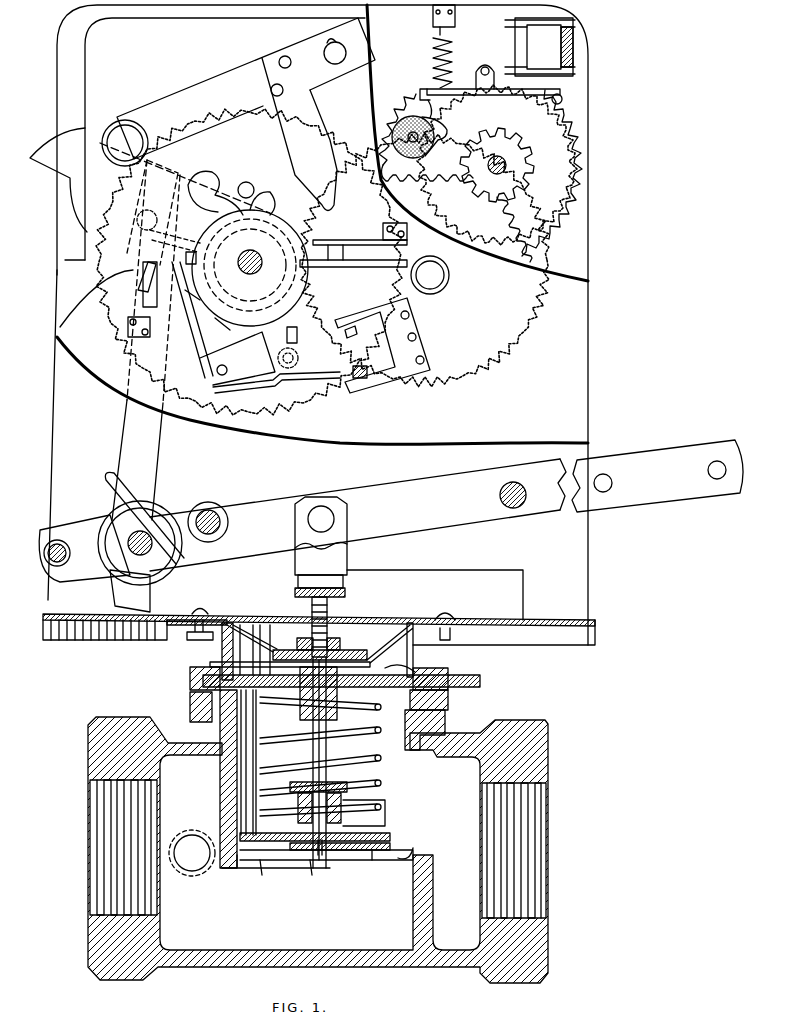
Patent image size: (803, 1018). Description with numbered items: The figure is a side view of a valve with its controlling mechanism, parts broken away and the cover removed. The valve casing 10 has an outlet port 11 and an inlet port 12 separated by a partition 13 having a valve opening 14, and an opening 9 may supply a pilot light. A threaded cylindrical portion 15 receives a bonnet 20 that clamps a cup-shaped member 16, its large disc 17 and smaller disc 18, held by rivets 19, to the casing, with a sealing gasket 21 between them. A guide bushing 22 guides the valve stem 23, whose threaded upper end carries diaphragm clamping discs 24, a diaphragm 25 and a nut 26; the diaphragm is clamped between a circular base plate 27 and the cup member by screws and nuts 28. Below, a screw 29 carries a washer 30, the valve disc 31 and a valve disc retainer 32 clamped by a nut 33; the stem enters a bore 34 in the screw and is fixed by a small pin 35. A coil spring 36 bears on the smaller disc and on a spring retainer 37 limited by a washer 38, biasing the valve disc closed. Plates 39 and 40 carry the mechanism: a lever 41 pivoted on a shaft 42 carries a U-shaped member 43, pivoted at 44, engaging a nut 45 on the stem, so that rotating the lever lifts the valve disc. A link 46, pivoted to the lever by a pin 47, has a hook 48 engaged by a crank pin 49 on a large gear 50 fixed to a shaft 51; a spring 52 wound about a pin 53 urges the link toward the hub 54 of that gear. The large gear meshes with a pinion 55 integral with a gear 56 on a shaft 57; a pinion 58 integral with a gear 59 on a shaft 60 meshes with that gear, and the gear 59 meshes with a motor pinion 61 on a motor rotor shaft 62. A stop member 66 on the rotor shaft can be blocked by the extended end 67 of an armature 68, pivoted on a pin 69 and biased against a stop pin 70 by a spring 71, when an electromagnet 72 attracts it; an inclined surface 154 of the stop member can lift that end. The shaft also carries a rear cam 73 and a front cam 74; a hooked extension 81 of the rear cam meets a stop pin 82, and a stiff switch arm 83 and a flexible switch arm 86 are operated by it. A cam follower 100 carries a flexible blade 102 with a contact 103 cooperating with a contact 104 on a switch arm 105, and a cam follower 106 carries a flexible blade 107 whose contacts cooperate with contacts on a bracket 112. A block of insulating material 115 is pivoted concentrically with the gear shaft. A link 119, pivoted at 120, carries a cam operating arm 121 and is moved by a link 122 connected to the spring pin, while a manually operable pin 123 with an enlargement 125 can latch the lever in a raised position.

The opening 9 is at (195, 875).
The valve casing 10 is at (548, 730).
The outlet port 11 is at (548, 843).
The inlet port 12 is at (100, 833).
The partition 13 is at (222, 820).
The valve opening 14 is at (410, 858).
The cylindrical portion 15 is at (408, 725).
The cup-shaped member 16 is at (222, 666).
The large disc 17 is at (450, 672).
The smaller disc 18 is at (440, 701).
The rivets 19 is at (200, 690).
The bonnet 20 is at (198, 715).
The sealing gasket 21 is at (198, 680).
The guide bushing 22 is at (336, 720).
The valve stem 23 is at (330, 750).
The diaphragm clamping discs 24 is at (355, 652).
The diaphragm 25 is at (385, 638).
The nut 26 is at (335, 642).
The circular base plate 27 is at (535, 622).
The screws and nuts 28 is at (198, 641).
The screw 29 is at (310, 860).
The washer 30 is at (290, 862).
The valve disc 31 is at (372, 856).
The valve disc retainer 32 is at (390, 840).
The nut 33 is at (350, 838).
The bore 34 is at (320, 846).
The small pin 35 is at (318, 842).
The coil spring 36 is at (380, 760).
The spring retainer 37 is at (385, 820).
The washer 38 is at (375, 791).
The plate 39 is at (60, 232).
The plate 40 is at (535, 393).
The lever 41 is at (622, 455).
The shaft 42 is at (520, 500).
The U-shaped member 43 is at (343, 565).
The pivot 44 is at (322, 515).
The nut 45 is at (340, 581).
The link 46 is at (152, 460).
The pin 47 is at (152, 553).
The hook 48 is at (215, 300).
The crank pin 49 is at (300, 364).
The large gear 50 is at (310, 407).
The shaft 51 is at (245, 251).
The spring 52 is at (90, 532).
The pin 53 is at (48, 566).
The hub 54 is at (235, 305).
The pinion 55 is at (455, 310).
The gear 56 is at (542, 253).
The shaft 57 is at (448, 279).
The pinion 58 is at (510, 148).
The gear 59 is at (580, 165).
The shaft 60 is at (515, 168).
The motor pinion 61 is at (405, 118).
The motor rotor shaft 62 is at (420, 145).
The stop member 66 is at (447, 133).
The extended end 67 is at (422, 95).
The armature 68 is at (555, 90).
The pin 69 is at (490, 62).
The stop pin 70 is at (565, 100).
The spring 71 is at (440, 58).
The electromagnet 72 is at (588, 52).
The rear cam 73 is at (195, 228).
The front cam 74 is at (200, 243).
The hooked extension 81 is at (205, 175).
The stop pin 82 is at (248, 178).
The switch arm 83 is at (345, 246).
The switch arm 86 is at (340, 260).
The cam follower 100 is at (198, 330).
The flexible blade 102 is at (165, 330).
The contact 103 is at (192, 258).
The contact 104 is at (145, 263).
The switch arm 105 is at (150, 290).
The cam follower 106 is at (297, 330).
The flexible blade 107 is at (275, 385).
The bracket 112 is at (425, 345).
The block of insulating material 115 is at (47, 140).
The link 119 is at (248, 68).
The pivot 120 is at (340, 38).
The cam operating arm 121 is at (280, 120).
The link 122 is at (53, 472).
The manually operable pin 123 is at (215, 510).
The enlargement 125 is at (205, 505).
The inclined surface 154 is at (428, 110).